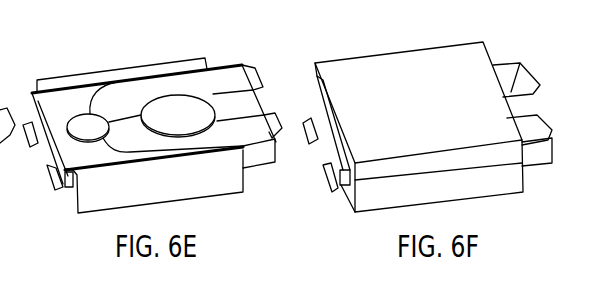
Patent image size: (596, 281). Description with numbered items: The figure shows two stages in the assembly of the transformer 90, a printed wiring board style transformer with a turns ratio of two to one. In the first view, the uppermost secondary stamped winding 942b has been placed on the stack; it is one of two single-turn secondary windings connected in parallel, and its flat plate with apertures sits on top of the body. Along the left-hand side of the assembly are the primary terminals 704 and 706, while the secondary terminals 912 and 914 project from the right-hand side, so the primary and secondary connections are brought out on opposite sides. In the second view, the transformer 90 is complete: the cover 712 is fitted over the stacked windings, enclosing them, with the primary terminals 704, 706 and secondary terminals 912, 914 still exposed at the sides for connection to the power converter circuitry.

In FIG. 6E, the transformer 90 is at (132, 47).
In FIG. 6F, the transformer 90 is at (393, 45).
In FIG. 6E, the stamped winding 942b is at (190, 80).
In FIG. 6E, the secondary terminal 914 is at (255, 78).
In FIG. 6F, the secondary terminal 914 is at (530, 72).
In FIG. 6E, the secondary terminal 912 is at (280, 128).
In FIG. 6F, the secondary terminal 912 is at (548, 118).
In FIG. 6E, the primary terminal 704 is at (27, 123).
In FIG. 6F, the primary terminal 704 is at (305, 126).
In FIG. 6E, the primary terminal 706 is at (55, 186).
In FIG. 6F, the primary terminal 706 is at (330, 174).
In FIG. 6F, the cover 712 is at (435, 59).